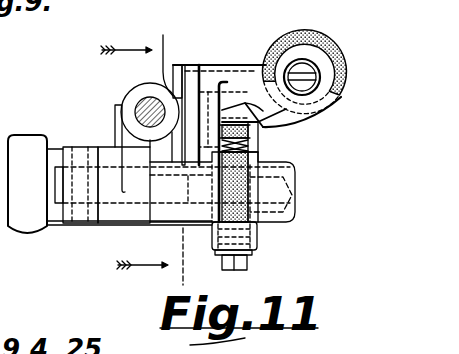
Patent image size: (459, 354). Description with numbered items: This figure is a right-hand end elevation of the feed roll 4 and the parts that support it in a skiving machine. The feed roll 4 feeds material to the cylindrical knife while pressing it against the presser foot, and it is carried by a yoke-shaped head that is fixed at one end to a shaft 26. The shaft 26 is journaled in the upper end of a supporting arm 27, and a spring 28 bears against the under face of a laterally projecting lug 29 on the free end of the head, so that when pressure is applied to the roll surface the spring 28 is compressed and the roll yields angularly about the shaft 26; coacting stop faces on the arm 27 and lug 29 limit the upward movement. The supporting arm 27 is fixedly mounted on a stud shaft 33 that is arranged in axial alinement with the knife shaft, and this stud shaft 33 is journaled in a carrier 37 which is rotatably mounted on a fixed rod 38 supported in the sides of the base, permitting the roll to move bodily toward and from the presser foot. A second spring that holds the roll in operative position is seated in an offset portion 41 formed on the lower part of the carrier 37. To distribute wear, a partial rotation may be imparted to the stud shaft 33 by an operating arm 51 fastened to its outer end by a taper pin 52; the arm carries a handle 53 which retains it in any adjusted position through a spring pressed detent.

The feed roll 4 is at (345, 30).
The shaft 26 is at (203, 76).
The supporting arm 27 is at (198, 96).
The spring 28 is at (250, 146).
The laterally projecting lug 29 is at (230, 110).
The stud shaft 33 is at (120, 204).
The carrier 37 is at (108, 152).
The fixed rod 38 is at (143, 99).
The offset portion 41 is at (345, 252).
The operating arm 51 is at (68, 218).
The taper pin 52 is at (80, 220).
The handle 53 is at (24, 137).